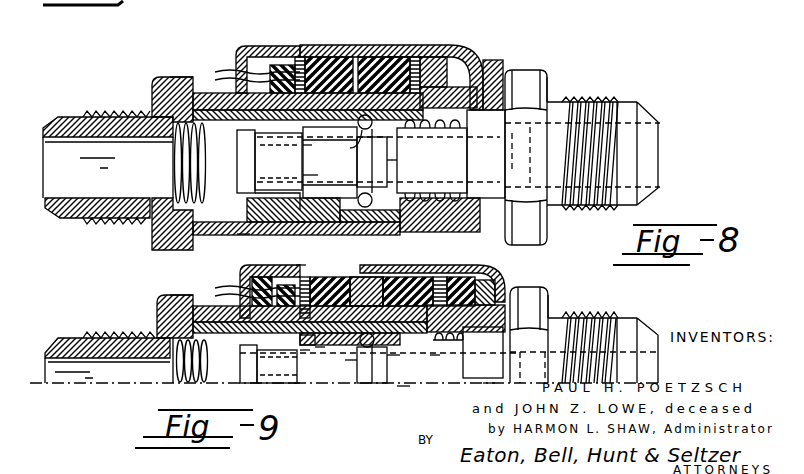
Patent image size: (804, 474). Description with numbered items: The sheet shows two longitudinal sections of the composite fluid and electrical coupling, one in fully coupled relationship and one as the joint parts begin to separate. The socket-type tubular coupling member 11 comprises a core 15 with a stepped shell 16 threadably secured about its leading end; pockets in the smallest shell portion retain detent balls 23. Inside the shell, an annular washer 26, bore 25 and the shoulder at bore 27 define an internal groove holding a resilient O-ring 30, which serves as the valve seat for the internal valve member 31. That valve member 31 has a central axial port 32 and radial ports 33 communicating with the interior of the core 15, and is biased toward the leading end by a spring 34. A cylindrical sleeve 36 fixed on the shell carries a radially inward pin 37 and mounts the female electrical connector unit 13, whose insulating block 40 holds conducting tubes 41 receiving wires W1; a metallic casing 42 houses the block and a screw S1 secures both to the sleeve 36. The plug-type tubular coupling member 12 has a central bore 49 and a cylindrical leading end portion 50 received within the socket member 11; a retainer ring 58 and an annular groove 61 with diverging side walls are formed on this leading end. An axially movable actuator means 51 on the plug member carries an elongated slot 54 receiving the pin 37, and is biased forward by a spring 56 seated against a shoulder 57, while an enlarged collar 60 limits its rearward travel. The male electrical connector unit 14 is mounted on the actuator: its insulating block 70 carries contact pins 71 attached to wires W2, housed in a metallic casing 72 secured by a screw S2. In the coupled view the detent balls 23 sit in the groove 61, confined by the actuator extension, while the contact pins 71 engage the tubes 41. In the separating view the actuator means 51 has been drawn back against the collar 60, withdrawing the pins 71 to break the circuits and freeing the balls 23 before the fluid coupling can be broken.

In FIG. 8, the tubular coupling member 11 is at (58, 114).
In FIG. 9, the tubular coupling member 11 is at (52, 343).
In FIG. 8, the tubular coupling member 12 is at (638, 96).
In FIG. 9, the tubular coupling member 12 is at (638, 318).
In FIG. 8, the electrical connector unit 13 is at (320, 42).
In FIG. 9, the electrical connector unit 13 is at (356, 315).
In FIG. 8, the electrical connector unit 14 is at (449, 42).
In FIG. 9, the electrical connector unit 14 is at (432, 283).
In FIG. 8, the core 15 is at (152, 96).
In FIG. 9, the core 15 is at (157, 318).
In FIG. 8, the shell 16 is at (190, 78).
In FIG. 9, the shell 16 is at (190, 296).
In FIG. 8, the detent balls 23 is at (414, 215).
In FIG. 9, the cylindrical bore 25 is at (322, 355).
In FIG. 8, the annular washer 26 is at (305, 138).
In FIG. 9, the annular washer 26 is at (268, 364).
In FIG. 9, the cylindrical bore 27 is at (350, 362).
In FIG. 8, the resilient sealing means 30 is at (324, 172).
In FIG. 9, the resilient sealing means 30 is at (303, 352).
In FIG. 8, the valve member 31 is at (240, 240).
In FIG. 9, the central axial port 32 is at (292, 384).
In FIG. 8, the radial ports 33 is at (277, 201).
In FIG. 9, the radial ports 33 is at (300, 343).
In FIG. 8, the spring 34 is at (172, 150).
In FIG. 9, the spring 34 is at (174, 360).
In FIG. 8, the cylindrical sleeve 36 is at (300, 228).
In FIG. 9, the cylindrical sleeve 36 is at (304, 262).
In FIG. 8, the pin 37 is at (448, 97).
In FIG. 9, the pin 37 is at (404, 336).
In FIG. 8, the insulating block 40 is at (340, 56).
In FIG. 8, the conducting tubes 41 is at (246, 48).
In FIG. 9, the conducting tubes 41 is at (350, 270).
In FIG. 8, the metallic casing 42 is at (278, 62).
In FIG. 9, the metallic casing 42 is at (270, 280).
In FIG. 9, the central bore 49 is at (488, 376).
In FIG. 8, the cylindrical leading end portion 50 is at (336, 166).
In FIG. 8, the axially movable actuator means 51 is at (527, 71).
In FIG. 9, the axially movable actuator means 51 is at (546, 306).
In FIG. 8, the elongated slot 54 is at (313, 146).
In FIG. 9, the elongated slot 54 is at (436, 360).
In FIG. 8, the spring 56 is at (430, 130).
In FIG. 9, the spring 56 is at (470, 343).
In FIG. 8, the shoulder 57 is at (470, 163).
In FIG. 8, the retainer ring 58 is at (395, 170).
In FIG. 9, the retainer ring 58 is at (402, 386).
In FIG. 8, the enlarged collar 60 is at (543, 78).
In FIG. 9, the enlarged collar 60 is at (560, 305).
In FIG. 8, the annular groove 61 is at (374, 157).
In FIG. 9, the annular groove 61 is at (378, 376).
In FIG. 8, the insulating block 70 is at (399, 52).
In FIG. 8, the contact pins 71 is at (390, 56).
In FIG. 9, the contact pins 71 is at (378, 277).
In FIG. 8, the metallic casing 72 is at (390, 57).
In FIG. 9, the metallic casing 72 is at (478, 274).
In FIG. 8, the screw S1 is at (300, 57).
In FIG. 9, the screw S1 is at (304, 277).
In FIG. 8, the screw S2 is at (418, 56).
In FIG. 9, the screw S2 is at (440, 277).
In FIG. 8, the wires W1 is at (232, 71).
In FIG. 9, the wires W1 is at (234, 294).
In FIG. 8, the wires W2 is at (484, 74).
In FIG. 9, the wires W2 is at (504, 298).